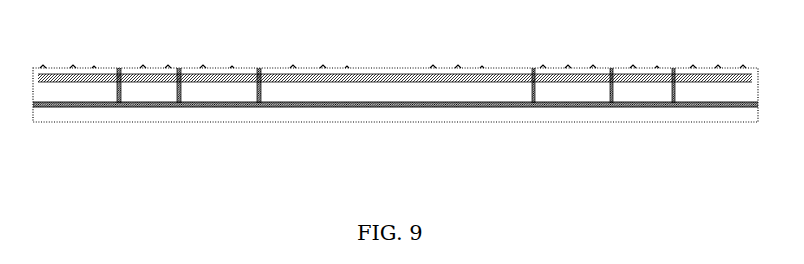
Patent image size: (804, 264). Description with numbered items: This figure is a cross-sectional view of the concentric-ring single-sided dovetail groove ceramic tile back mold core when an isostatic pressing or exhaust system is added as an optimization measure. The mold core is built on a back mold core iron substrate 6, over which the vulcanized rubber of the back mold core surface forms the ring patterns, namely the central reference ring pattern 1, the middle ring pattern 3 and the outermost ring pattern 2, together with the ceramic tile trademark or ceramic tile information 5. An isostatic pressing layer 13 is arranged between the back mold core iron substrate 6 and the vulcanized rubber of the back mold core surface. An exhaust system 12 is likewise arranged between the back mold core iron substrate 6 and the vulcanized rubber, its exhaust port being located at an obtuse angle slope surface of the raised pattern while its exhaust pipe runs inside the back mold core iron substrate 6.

The central reference ring pattern 1 is at (356, 69).
The outermost ring pattern 2 is at (78, 69).
The middle ring pattern 3 is at (217, 69).
The ceramic tile trademark or ceramic tile information 5 is at (396, 69).
The back mold core iron substrate 6 is at (485, 92).
The exhaust system 12 is at (397, 107).
The isostatic pressing layer 13 is at (300, 75).